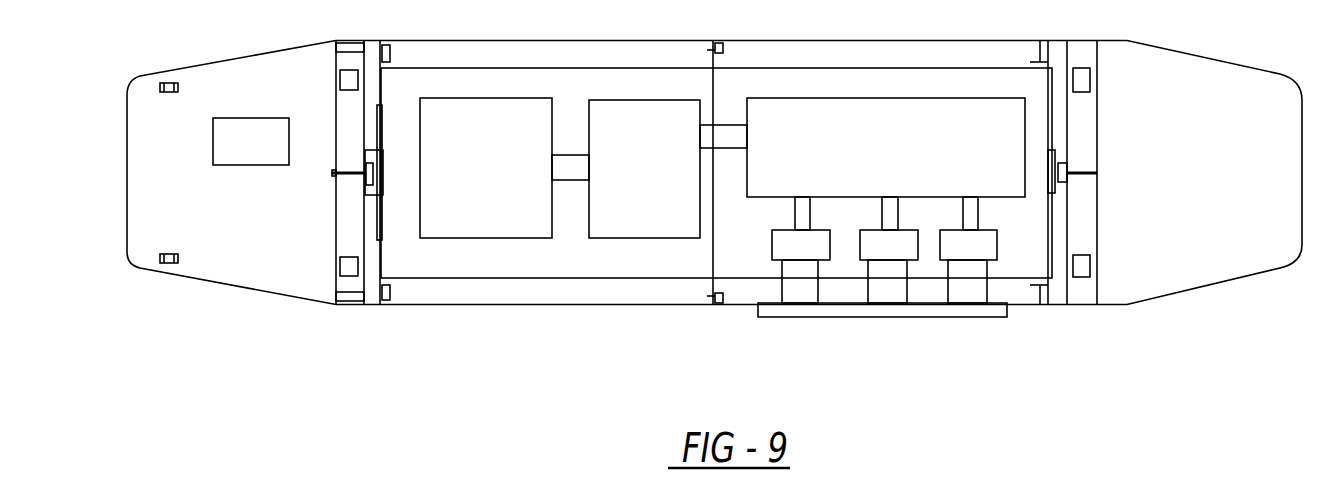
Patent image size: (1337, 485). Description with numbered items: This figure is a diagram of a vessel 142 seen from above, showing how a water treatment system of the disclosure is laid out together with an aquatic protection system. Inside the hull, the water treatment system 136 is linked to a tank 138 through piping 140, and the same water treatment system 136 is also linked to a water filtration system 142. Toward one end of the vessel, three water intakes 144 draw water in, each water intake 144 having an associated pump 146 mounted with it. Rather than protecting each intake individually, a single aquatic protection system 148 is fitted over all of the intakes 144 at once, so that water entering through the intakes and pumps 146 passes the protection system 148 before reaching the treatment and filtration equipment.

The water treatment system 136 is at (762, 197).
The tank 138 is at (475, 238).
The piping 140 is at (578, 180).
The water filtration system 142 is at (238, 290).
The water intake 144 is at (808, 288).
The pump 146 is at (818, 250).
The aquatic protection system 148 is at (985, 317).